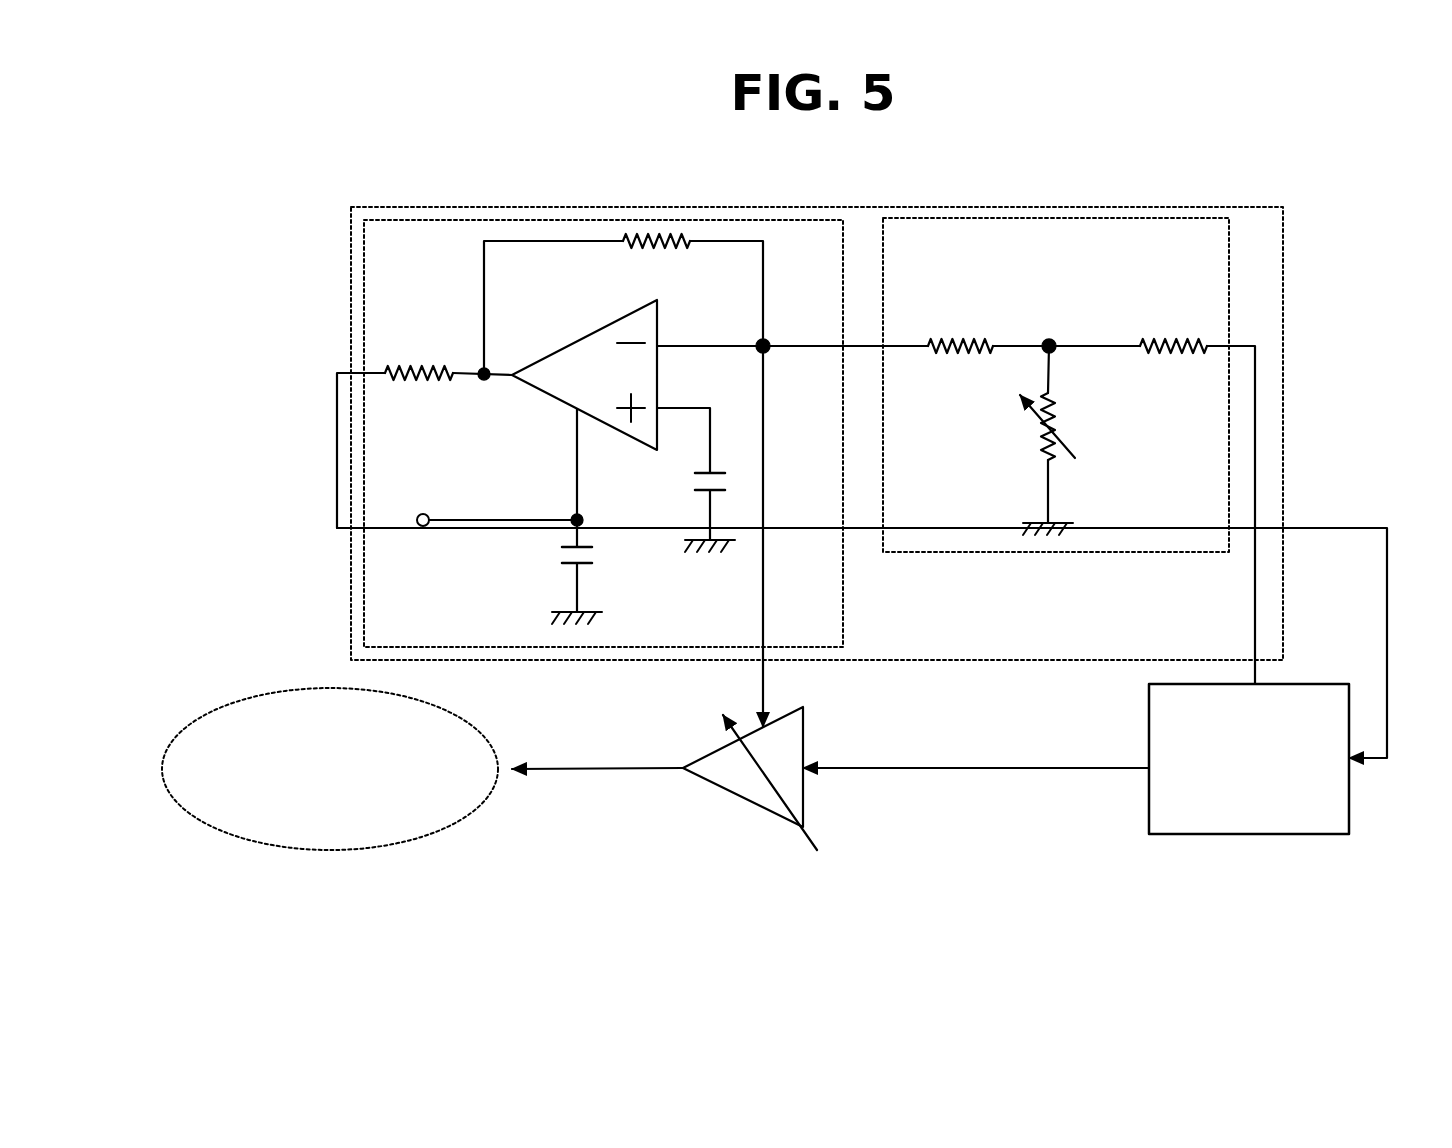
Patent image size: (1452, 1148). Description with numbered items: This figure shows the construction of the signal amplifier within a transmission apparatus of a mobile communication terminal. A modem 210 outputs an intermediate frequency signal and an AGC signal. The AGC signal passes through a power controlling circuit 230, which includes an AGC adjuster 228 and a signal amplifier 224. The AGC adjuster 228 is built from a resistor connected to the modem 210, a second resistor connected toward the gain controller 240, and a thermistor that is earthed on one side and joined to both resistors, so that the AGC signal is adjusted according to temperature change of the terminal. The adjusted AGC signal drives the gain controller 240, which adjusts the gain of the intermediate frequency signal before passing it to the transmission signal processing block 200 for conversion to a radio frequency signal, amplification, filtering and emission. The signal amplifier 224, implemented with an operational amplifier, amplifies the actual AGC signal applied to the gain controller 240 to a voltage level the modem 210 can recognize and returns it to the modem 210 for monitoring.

The transmission signal processing block 200 is at (332, 687).
The modem 210 is at (1250, 834).
The signal amplifier 224 is at (363, 437).
The AGC adjuster 228 is at (1056, 552).
The power controlling circuit 230 is at (815, 660).
The gain controller 240 is at (743, 800).